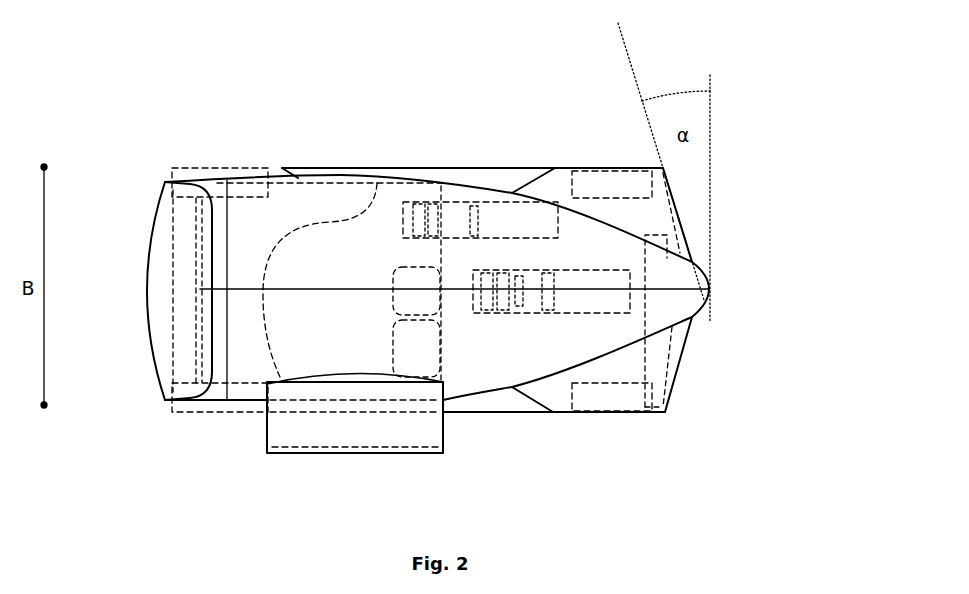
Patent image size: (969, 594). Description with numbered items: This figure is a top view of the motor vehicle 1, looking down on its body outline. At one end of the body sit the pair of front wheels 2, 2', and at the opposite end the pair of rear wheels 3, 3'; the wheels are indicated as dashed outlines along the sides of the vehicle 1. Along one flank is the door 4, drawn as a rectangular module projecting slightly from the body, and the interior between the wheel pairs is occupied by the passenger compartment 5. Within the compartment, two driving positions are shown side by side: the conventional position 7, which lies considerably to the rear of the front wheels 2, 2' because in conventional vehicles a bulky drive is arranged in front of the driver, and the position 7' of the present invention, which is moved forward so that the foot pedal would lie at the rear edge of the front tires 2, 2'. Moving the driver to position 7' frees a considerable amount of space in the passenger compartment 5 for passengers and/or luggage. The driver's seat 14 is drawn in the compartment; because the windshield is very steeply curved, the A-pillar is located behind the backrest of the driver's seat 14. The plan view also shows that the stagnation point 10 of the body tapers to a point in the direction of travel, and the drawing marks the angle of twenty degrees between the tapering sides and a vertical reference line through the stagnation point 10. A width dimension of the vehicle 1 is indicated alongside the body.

The motor vehicle 1 is at (760, 166).
The front wheel 2 is at (612, 442).
The front wheel 2' is at (612, 156).
The rear wheel 3 is at (220, 428).
The rear wheel 3' is at (220, 155).
The door 4 is at (305, 428).
The passenger compartment 5 is at (332, 243).
The driver position 7 is at (480, 160).
The driver position 7' is at (551, 381).
The stagnation point 10 is at (712, 288).
The driver's seat 14 is at (500, 300).